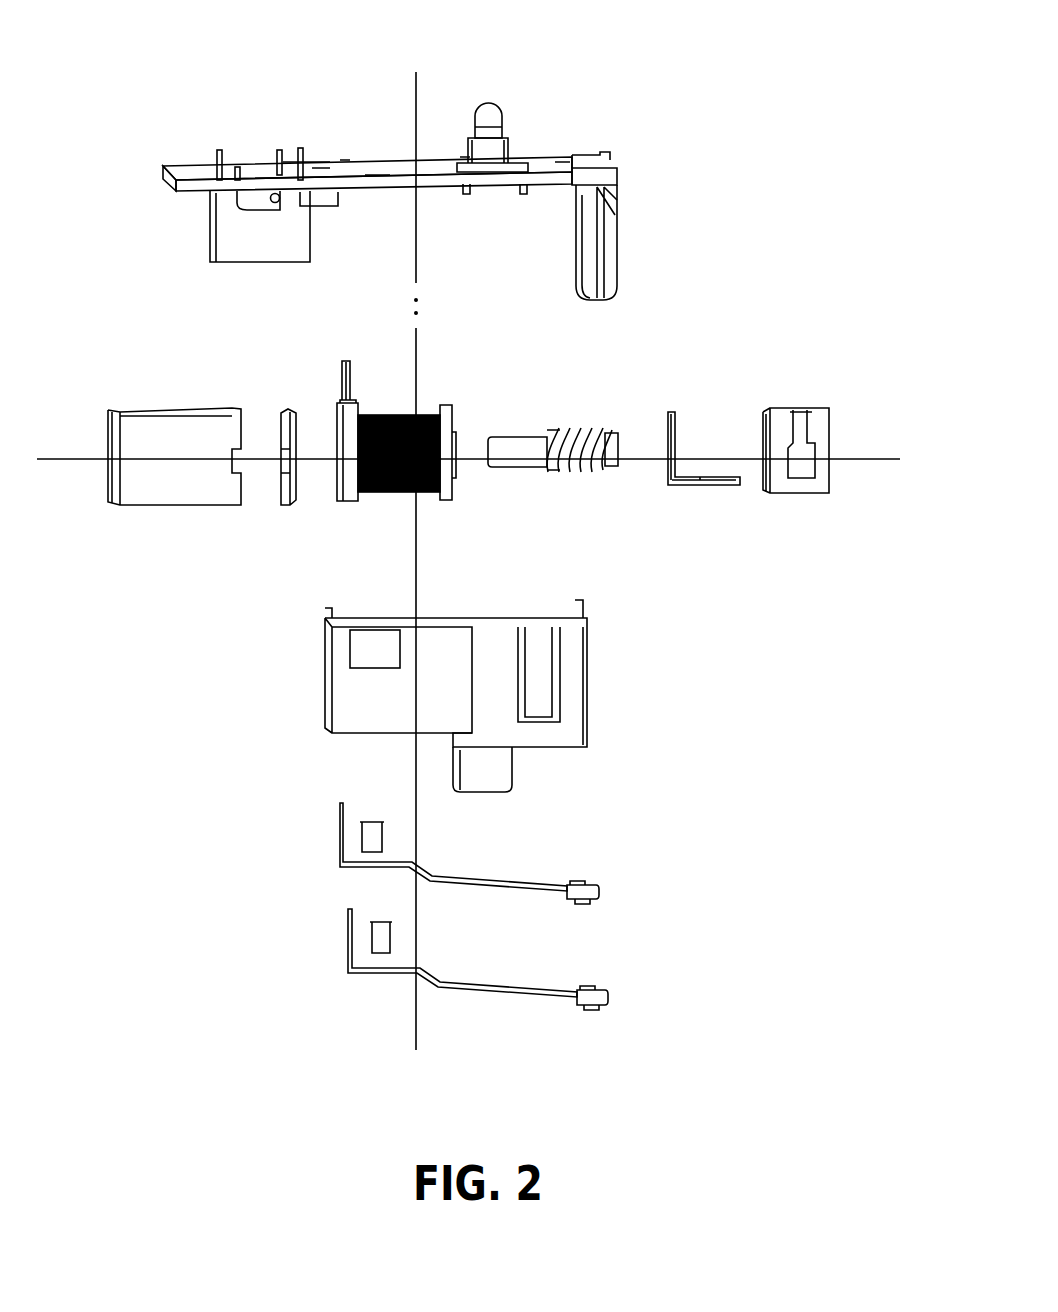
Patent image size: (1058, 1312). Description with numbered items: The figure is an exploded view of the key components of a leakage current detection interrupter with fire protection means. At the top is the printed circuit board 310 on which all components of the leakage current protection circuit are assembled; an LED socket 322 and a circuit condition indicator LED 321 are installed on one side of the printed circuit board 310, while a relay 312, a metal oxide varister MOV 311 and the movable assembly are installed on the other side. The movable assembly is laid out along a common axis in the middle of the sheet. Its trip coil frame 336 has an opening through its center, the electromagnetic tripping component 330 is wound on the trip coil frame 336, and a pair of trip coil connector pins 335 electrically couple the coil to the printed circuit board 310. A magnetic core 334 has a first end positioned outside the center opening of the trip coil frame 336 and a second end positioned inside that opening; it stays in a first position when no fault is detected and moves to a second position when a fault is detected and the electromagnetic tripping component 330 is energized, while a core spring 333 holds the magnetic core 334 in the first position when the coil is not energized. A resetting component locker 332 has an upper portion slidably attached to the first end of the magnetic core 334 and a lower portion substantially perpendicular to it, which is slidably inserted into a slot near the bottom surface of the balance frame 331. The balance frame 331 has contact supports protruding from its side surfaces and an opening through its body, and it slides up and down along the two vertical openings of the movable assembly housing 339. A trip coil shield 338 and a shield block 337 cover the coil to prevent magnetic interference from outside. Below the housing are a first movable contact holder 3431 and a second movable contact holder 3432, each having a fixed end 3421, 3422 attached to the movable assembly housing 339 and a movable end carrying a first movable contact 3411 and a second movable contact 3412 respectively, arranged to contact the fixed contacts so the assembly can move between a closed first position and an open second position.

The printed circuit board 310 is at (178, 172).
The metal oxide varister MOV 311 is at (620, 262).
The relay 312 is at (225, 232).
The circuit condition indicator LED 321 is at (497, 112).
The LED socket 322 is at (510, 146).
The electromagnetic tripping component 330 is at (397, 416).
The balance frame 331 is at (808, 494).
The resetting component locker 332 is at (695, 488).
The core spring 333 is at (561, 470).
The magnetic core 334 is at (510, 438).
The trip coil connector pins 335 is at (347, 382).
The trip coil frame 336 is at (350, 502).
The shield block 337 is at (290, 506).
The trip coil shield 338 is at (198, 490).
The movable assembly housing 339 is at (574, 688).
The first movable contact 3411 is at (600, 890).
The second movable contact 3412 is at (609, 998).
The fixed end 3421 is at (384, 843).
The fixed end 3422 is at (395, 945).
The first movable contact holder 3431 is at (338, 837).
The second movable contact holder 3432 is at (346, 940).